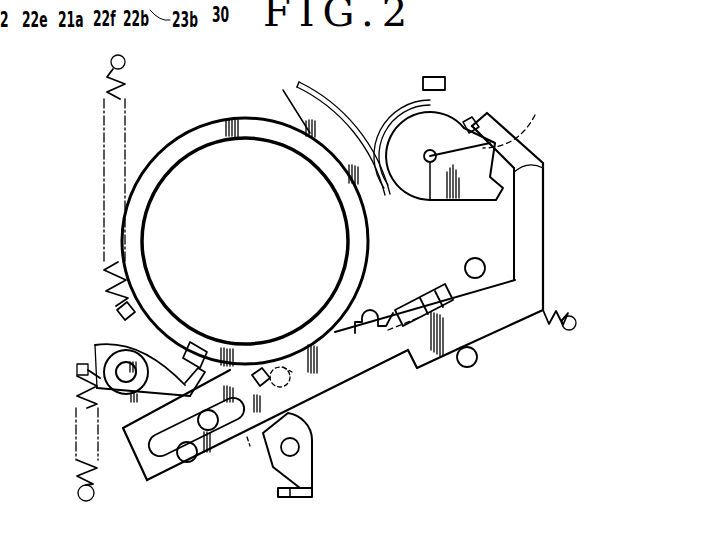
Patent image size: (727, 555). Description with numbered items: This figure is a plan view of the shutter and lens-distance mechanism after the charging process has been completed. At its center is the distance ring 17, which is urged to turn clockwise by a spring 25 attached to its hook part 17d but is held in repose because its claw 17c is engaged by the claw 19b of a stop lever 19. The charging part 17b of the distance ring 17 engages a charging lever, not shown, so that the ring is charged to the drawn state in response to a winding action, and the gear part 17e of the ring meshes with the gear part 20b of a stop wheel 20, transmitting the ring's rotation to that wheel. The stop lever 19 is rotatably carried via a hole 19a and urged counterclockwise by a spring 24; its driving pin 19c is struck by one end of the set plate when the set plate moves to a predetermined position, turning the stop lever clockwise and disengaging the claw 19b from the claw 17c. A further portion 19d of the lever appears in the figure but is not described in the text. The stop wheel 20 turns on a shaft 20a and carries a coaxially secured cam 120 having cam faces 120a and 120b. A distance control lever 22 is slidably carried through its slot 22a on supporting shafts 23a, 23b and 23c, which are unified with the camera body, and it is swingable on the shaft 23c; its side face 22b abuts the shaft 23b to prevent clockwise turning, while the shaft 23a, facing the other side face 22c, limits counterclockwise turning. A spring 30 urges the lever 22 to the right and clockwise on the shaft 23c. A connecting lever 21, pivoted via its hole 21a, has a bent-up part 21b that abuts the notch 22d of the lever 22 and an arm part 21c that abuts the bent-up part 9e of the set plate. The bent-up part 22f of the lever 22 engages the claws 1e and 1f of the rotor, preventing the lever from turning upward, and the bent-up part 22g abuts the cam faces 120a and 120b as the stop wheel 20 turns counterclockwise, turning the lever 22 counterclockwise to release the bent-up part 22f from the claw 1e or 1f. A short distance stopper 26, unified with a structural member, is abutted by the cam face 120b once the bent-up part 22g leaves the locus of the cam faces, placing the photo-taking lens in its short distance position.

The distance ring 17 is at (220, 127).
The charging part 17b is at (283, 367).
The claw 17c is at (183, 352).
The hook part 17d is at (117, 307).
The gear part 17e is at (335, 110).
The stop lever 19 is at (97, 347).
The hole 19a is at (100, 347).
The claw 19b is at (147, 353).
The driving pin 19c is at (186, 462).
The lever spring hook 19d is at (77, 370).
The stop wheel 20 is at (455, 118).
The shaft 20a is at (420, 152).
The gear part 20b is at (380, 130).
The connecting lever 21 is at (303, 460).
The hole 21a is at (299, 438).
The bent-up part 21b is at (247, 437).
The arm part 21c is at (312, 488).
The bent-up part 9e is at (290, 495).
The distance control lever 22 is at (392, 352).
The slot 22a is at (207, 430).
The side face 22b is at (448, 357).
The side face 22c is at (490, 307).
The notch 22d is at (258, 372).
The bent-up part 22f is at (370, 312).
The bent-up part 22g is at (481, 115).
The supporting shaft 23a is at (473, 257).
The supporting shaft 23b is at (473, 368).
The supporting shaft 23c is at (276, 388).
The spring 24 is at (75, 420).
The spring 25 is at (100, 268).
The stopper for a short distance 26 is at (433, 76).
The spring 30 is at (548, 332).
The cam 120 is at (432, 205).
The cam face 120a is at (522, 118).
The cam face 120b is at (545, 170).
The claw 1e is at (425, 289).
The claw 1f is at (430, 292).